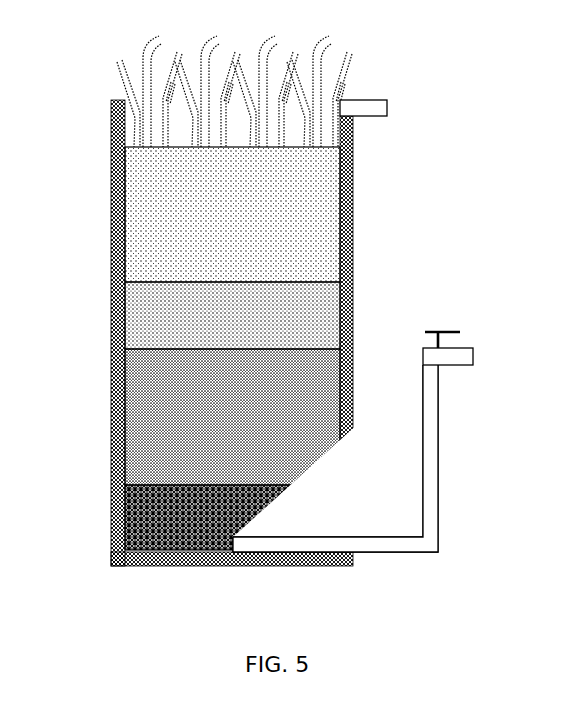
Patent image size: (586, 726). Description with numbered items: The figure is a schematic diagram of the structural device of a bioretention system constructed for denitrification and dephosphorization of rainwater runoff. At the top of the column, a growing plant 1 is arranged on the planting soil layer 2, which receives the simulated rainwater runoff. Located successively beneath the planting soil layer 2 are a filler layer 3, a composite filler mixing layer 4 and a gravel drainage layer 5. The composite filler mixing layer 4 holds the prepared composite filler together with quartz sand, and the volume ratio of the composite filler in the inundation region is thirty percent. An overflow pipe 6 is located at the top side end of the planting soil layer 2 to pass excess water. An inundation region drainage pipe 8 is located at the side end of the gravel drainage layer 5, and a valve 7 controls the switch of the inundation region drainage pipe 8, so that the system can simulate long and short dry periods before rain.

The growing plant 1 is at (137, 126).
The planting soil layer 2 is at (137, 236).
The filler layer 3 is at (137, 332).
The composite filler mixing layer 4 is at (137, 430).
The gravel drainage layer 5 is at (137, 530).
The overflow pipe 6 is at (378, 100).
The valve 7 is at (460, 332).
The inundation region drainage pipe 8 is at (438, 488).